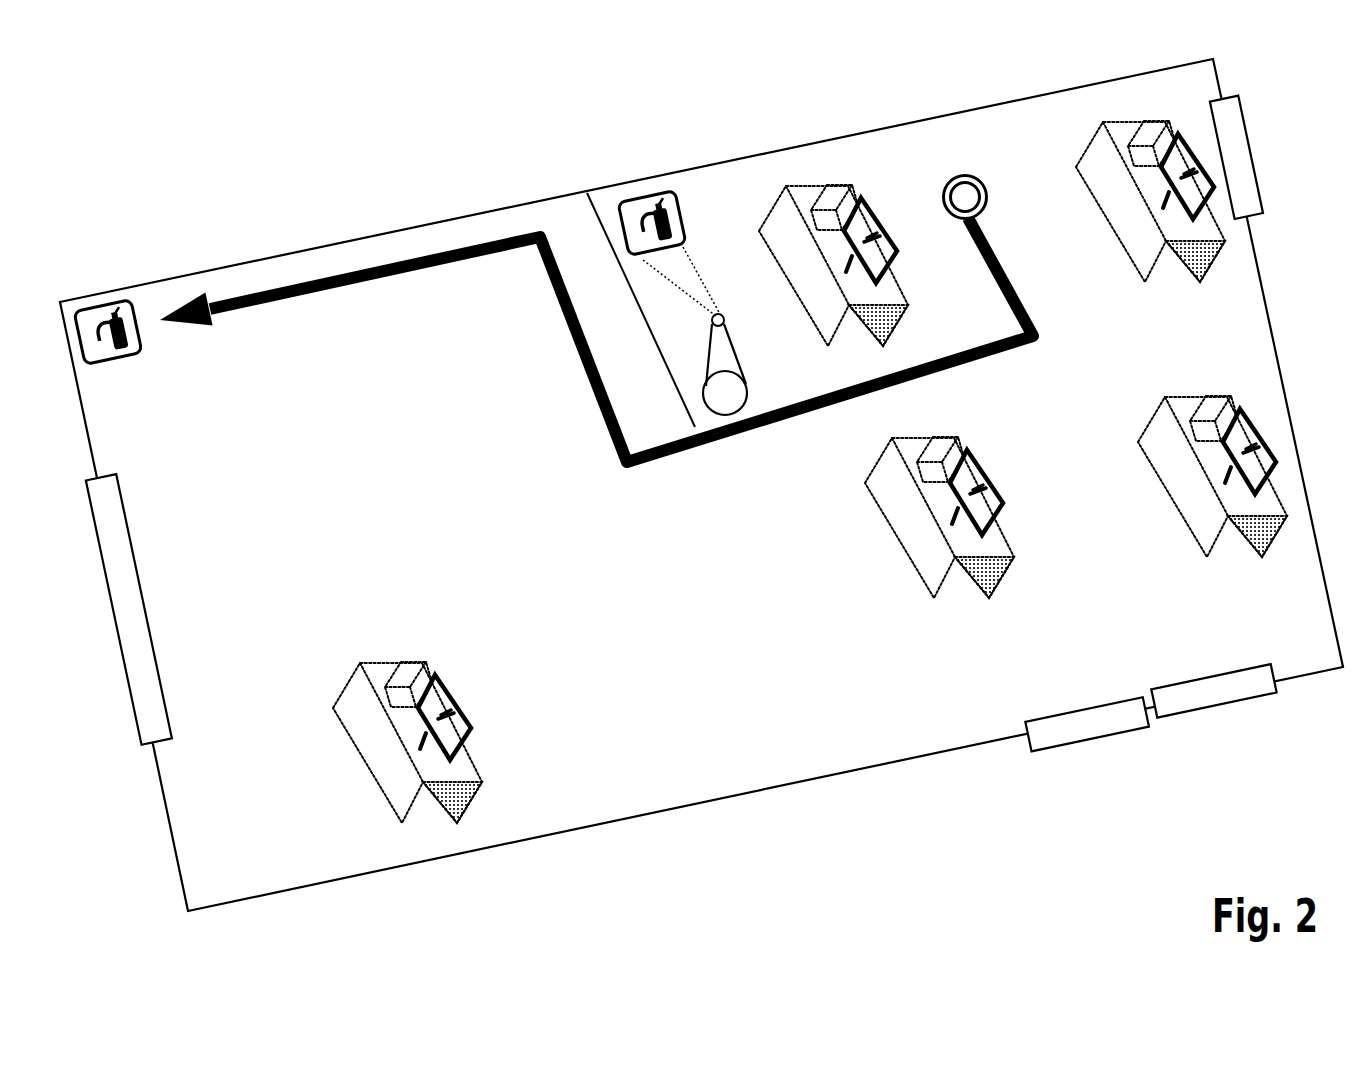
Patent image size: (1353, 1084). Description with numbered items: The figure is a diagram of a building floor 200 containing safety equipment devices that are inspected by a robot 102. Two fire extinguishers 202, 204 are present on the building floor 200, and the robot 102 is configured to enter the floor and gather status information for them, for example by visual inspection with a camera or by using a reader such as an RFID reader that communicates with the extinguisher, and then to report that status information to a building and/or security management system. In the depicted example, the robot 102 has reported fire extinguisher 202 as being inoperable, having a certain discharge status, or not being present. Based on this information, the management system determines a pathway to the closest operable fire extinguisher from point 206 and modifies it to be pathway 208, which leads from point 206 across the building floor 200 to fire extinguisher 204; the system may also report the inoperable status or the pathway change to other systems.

The building floor 200 is at (750, 794).
The fire extinguisher 202 is at (648, 195).
The fire extinguisher 204 is at (118, 362).
The point 206 is at (955, 175).
The pathway 208 is at (675, 453).
The robot 102 is at (747, 397).